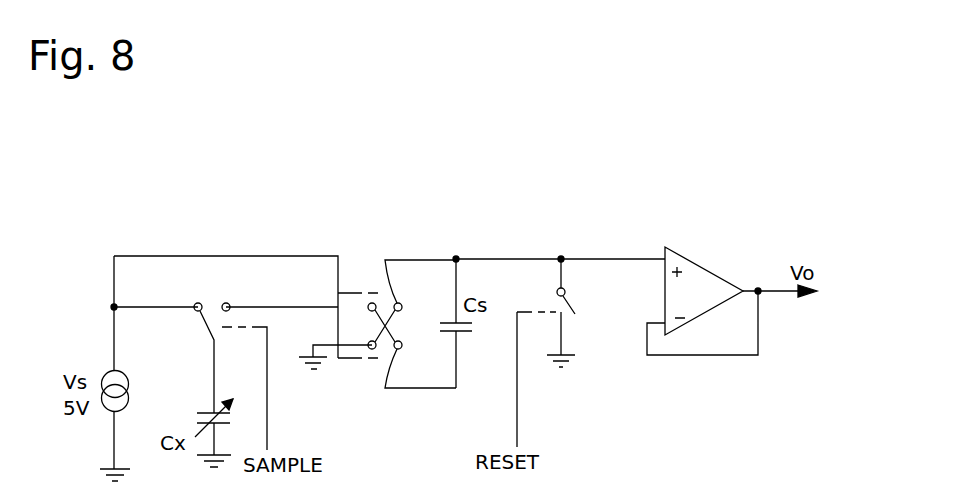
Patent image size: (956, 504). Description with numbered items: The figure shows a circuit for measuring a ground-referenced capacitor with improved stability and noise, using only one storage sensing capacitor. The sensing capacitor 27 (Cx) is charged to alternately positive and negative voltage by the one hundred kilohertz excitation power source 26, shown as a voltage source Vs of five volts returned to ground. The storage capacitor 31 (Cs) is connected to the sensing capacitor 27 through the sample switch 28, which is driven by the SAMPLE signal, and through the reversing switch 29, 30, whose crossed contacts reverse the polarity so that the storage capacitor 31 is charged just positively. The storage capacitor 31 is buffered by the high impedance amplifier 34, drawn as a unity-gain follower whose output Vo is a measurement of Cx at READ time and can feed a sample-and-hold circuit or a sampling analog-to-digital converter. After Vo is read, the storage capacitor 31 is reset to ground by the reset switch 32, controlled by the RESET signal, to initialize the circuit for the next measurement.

The excitation power source 26 is at (102, 365).
The sensing capacitor 27 is at (194, 411).
The sample switch 28 is at (193, 323).
The reversing switch 29 is at (392, 285).
The reversing switch 30 is at (380, 363).
The storage capacitor 31 is at (450, 338).
The reset switch 32 is at (589, 321).
The high impedance amplifier 34 is at (705, 262).